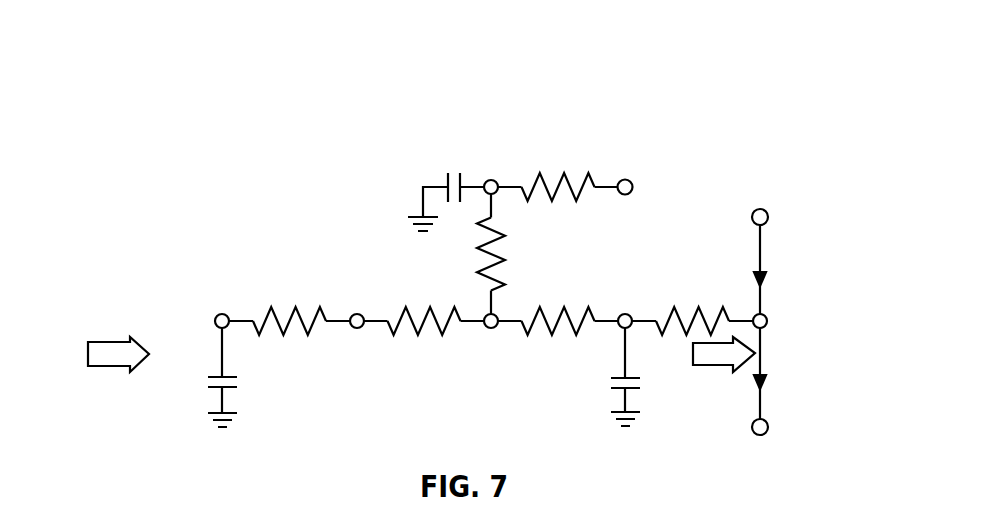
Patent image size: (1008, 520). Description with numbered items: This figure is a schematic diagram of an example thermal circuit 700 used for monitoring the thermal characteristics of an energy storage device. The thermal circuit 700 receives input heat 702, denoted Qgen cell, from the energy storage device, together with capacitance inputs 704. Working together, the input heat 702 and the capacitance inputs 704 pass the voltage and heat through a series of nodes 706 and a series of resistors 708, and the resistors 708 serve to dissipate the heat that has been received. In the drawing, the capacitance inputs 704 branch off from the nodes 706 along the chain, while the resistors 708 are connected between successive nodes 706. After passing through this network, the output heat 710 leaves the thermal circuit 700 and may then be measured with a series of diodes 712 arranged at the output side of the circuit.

The thermal circuit 700 is at (604, 66).
The input heat 702 is at (113, 341).
The capacitance inputs 704 is at (224, 401).
The nodes 706 is at (220, 313).
The resistors 708 is at (307, 329).
The output heat 710 is at (729, 368).
The diodes 712 is at (767, 280).